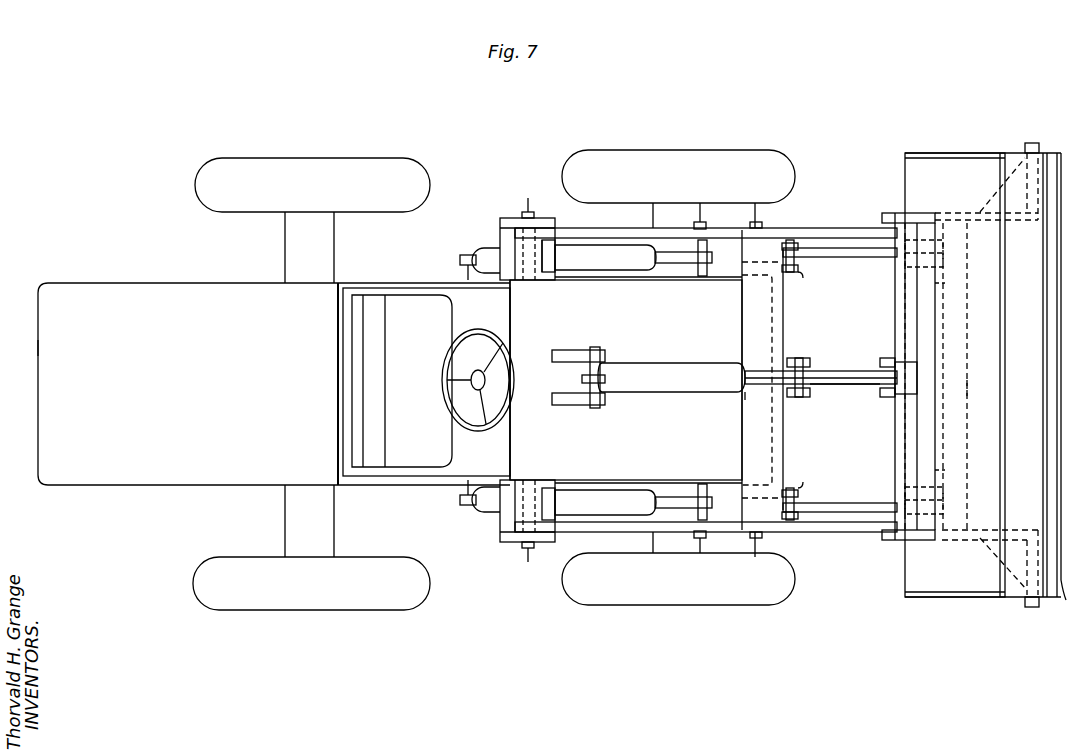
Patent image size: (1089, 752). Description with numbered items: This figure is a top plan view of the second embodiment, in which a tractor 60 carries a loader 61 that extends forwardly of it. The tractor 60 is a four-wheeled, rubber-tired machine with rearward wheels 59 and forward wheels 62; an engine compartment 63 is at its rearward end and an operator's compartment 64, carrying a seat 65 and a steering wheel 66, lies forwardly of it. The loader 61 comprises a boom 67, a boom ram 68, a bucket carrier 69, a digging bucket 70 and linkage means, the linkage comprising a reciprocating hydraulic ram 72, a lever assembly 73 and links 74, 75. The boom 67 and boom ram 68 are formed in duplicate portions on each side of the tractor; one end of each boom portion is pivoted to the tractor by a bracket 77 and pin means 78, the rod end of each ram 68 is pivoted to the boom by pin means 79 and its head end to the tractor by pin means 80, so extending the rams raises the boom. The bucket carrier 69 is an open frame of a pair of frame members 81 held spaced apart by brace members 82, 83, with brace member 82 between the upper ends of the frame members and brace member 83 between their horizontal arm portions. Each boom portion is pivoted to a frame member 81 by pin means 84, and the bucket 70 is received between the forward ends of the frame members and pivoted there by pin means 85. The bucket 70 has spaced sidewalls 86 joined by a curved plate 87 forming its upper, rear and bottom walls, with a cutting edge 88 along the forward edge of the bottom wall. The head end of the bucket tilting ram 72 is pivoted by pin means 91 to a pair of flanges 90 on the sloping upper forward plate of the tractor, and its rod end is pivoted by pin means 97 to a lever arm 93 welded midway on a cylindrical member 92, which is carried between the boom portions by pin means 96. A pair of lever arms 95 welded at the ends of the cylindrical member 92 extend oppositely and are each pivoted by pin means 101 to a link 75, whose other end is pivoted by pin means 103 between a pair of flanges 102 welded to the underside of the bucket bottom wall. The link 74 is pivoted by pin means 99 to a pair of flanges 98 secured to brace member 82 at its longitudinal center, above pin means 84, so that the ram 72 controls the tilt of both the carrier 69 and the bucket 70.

The rearward wheels 59 is at (236, 165).
The tractor 60 is at (165, 271).
The loader 61 is at (842, 159).
The forward wheels 62 is at (606, 152).
The engine compartment 63 is at (55, 348).
The operator's compartment 64 is at (465, 302).
The seat 65 is at (372, 362).
The steering wheel 66 is at (456, 418).
The boom 67 is at (822, 228).
The boom ram 68 is at (623, 266).
The bucket carrier 69 is at (893, 445).
The digging bucket 70 is at (960, 150).
The reciprocating hydraulic ram 72 is at (645, 363).
The lever assembly 73 is at (734, 308).
The link 74 is at (840, 386).
The links 75 is at (849, 258).
The bracket 77 is at (505, 218).
The pin means 78 is at (525, 212).
The pin means 79 is at (697, 222).
The pin means 80 is at (478, 250).
The frame members 81 is at (920, 213).
The brace member 82 is at (895, 314).
The brace member 83 is at (968, 380).
The pin means 84 is at (895, 213).
The pin means 85 is at (1032, 145).
The sidewalls 86 is at (950, 153).
The curved plate 87 is at (1015, 345).
The cutting edge 88 is at (1063, 598).
The flanges 90 is at (565, 350).
The pin means 91 is at (596, 408).
The cylindrical member 92 is at (742, 345).
The lever arm 93 is at (762, 392).
The lever arms 95 is at (800, 276).
The pin means 96 is at (755, 205).
The pin means 97 is at (798, 358).
The flanges 98 is at (880, 362).
The pin means 99 is at (885, 397).
The pin means 101 is at (788, 240).
The flanges 102 is at (950, 245).
The pin means 103 is at (938, 283).